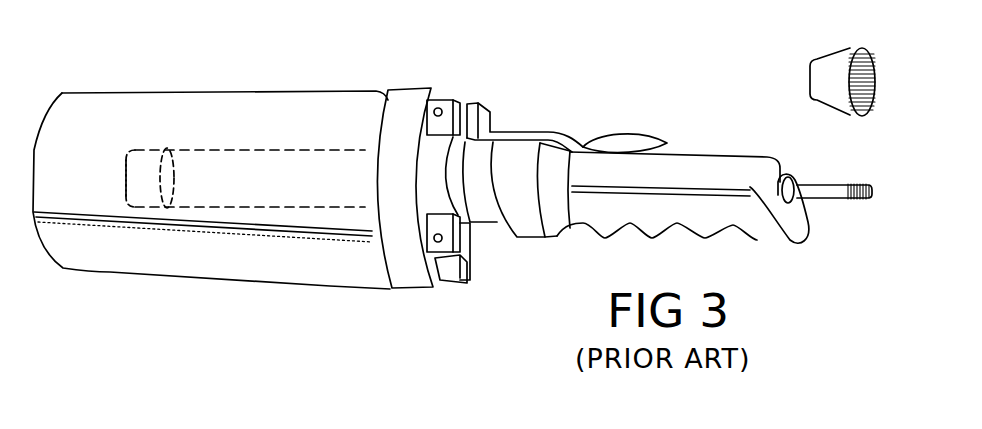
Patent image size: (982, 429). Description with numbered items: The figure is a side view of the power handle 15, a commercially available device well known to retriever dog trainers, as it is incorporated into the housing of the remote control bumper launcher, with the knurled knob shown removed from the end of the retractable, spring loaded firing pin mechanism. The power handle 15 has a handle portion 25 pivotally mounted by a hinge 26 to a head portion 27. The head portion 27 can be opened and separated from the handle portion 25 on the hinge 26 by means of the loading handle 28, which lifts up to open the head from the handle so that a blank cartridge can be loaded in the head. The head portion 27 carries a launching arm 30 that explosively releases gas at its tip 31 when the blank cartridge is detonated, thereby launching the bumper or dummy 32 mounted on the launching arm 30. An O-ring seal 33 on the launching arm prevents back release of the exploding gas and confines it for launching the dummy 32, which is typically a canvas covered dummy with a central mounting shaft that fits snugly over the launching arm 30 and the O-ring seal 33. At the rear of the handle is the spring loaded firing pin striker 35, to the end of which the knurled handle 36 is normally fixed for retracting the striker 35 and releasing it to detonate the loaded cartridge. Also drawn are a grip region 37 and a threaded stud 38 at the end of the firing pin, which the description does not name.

The power handle 15 is at (671, 81).
The handle portion 25 is at (746, 158).
The hinge 26 is at (480, 262).
The head portion 27 is at (398, 92).
The loading handle 28 is at (580, 143).
The launching arm 30 is at (352, 150).
The tip 31 is at (127, 172).
The bumper or dummy 32 is at (183, 91).
The O-ring seal 33 is at (173, 150).
The firing pin striker 35 is at (817, 182).
The knurled handle 36 is at (810, 66).
The finger grip 37 is at (712, 238).
The threaded stud 38 is at (863, 205).